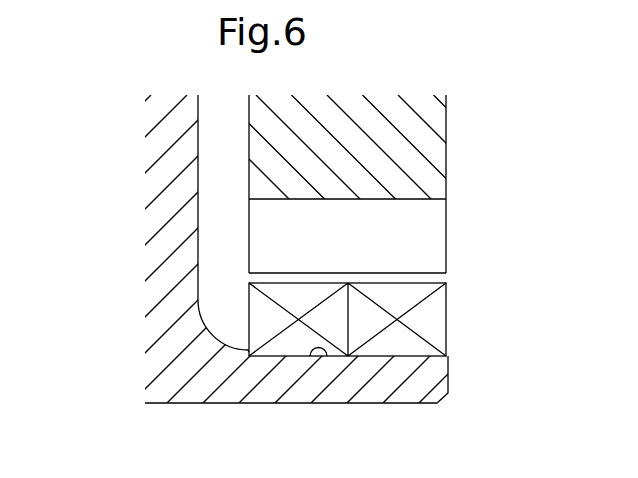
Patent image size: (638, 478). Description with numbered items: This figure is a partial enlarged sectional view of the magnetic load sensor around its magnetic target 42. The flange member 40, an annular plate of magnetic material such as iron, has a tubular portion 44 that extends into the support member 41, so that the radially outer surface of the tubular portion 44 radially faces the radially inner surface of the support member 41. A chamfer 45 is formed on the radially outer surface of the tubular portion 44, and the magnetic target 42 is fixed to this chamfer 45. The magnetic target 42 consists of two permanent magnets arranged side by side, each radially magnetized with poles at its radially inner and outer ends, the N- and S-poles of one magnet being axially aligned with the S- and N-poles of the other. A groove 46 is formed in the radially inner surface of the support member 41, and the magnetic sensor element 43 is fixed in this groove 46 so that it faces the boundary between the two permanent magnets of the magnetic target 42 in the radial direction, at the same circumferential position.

The flange member 40 is at (152, 120).
The support member 41 is at (446, 114).
The magnetic target 42 is at (443, 318).
The magnetic sensor element 43 is at (447, 245).
The tubular portion 44 is at (435, 370).
The chamfer 45 is at (327, 356).
The groove 46 is at (410, 201).